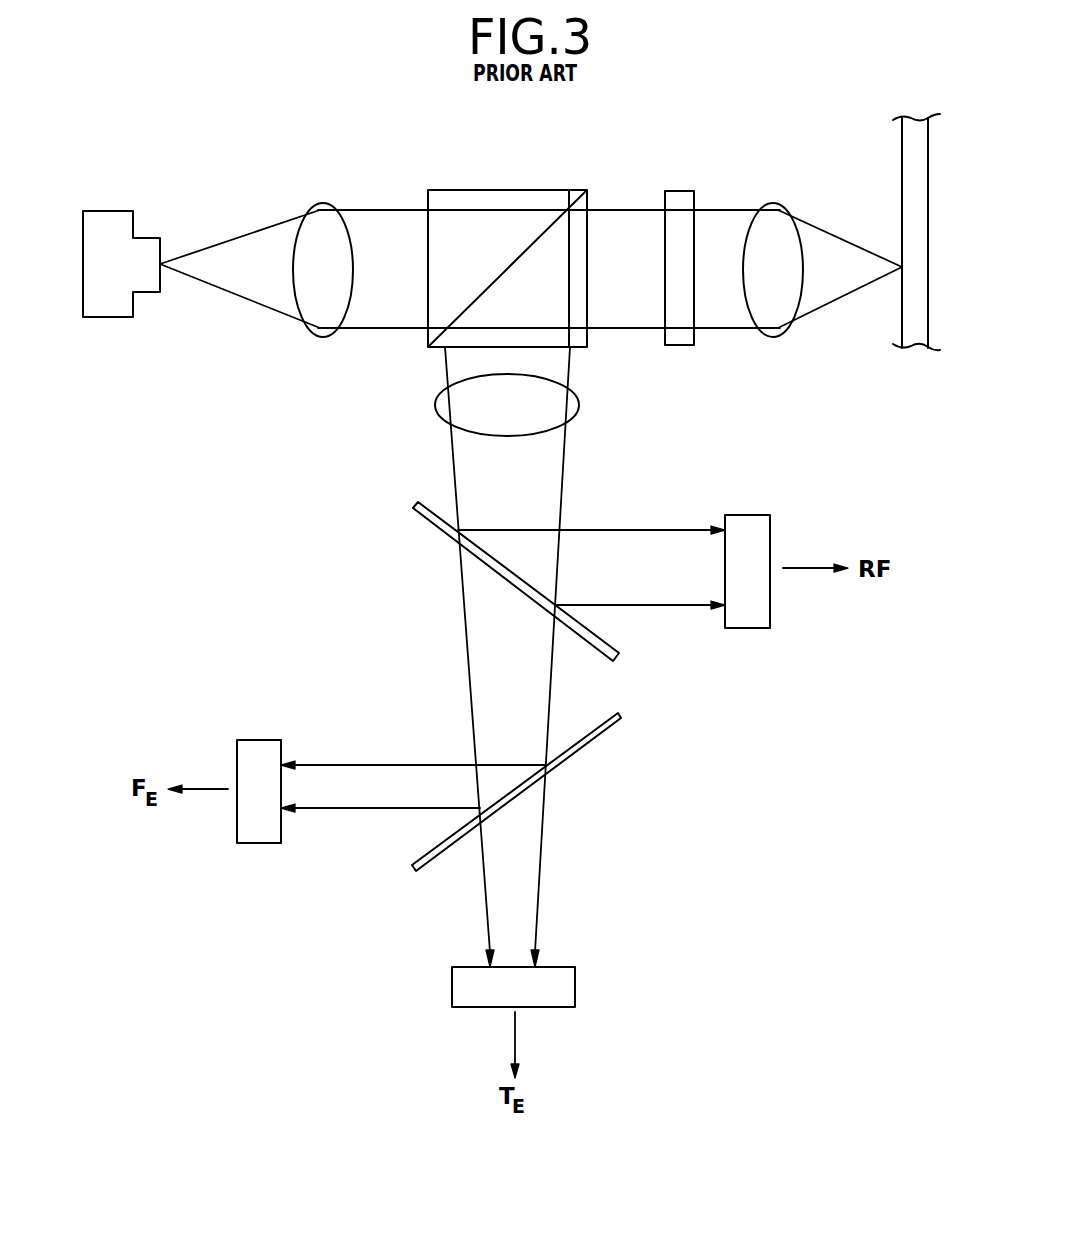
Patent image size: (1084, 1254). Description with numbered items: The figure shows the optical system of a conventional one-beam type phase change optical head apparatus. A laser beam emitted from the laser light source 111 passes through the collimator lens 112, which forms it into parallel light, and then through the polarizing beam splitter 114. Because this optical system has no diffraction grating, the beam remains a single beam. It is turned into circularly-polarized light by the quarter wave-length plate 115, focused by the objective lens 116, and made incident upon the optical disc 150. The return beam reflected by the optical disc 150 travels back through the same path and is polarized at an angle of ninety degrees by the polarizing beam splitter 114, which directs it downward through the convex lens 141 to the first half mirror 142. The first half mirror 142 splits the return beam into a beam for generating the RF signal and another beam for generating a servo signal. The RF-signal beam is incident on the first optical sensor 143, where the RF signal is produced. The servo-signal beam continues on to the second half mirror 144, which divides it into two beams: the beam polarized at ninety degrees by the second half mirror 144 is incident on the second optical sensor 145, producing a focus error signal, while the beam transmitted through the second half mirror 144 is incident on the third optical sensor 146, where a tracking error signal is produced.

The laser light source 111 is at (104, 211).
The collimator lens 112 is at (323, 337).
The polarizing beam splitter 114 is at (524, 190).
The quarter wave-length plate 115 is at (680, 191).
The objective lens 116 is at (773, 204).
The optical disc 150 is at (902, 212).
The convex lens 141 is at (580, 405).
The first half mirror 142 is at (420, 518).
The first optical sensor 143 is at (745, 628).
The second half mirror 144 is at (590, 735).
The second optical sensor 145 is at (255, 843).
The third optical sensor 146 is at (577, 987).